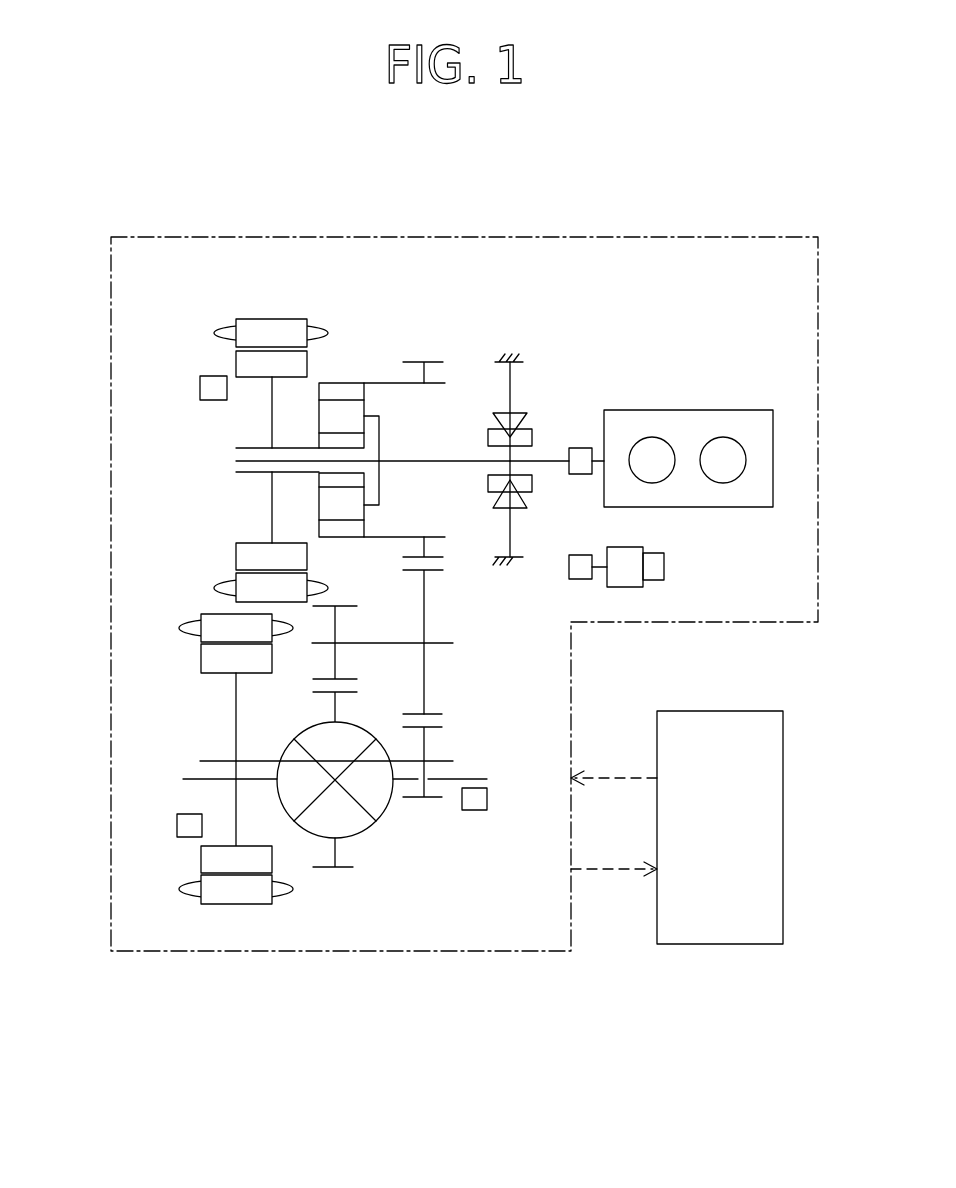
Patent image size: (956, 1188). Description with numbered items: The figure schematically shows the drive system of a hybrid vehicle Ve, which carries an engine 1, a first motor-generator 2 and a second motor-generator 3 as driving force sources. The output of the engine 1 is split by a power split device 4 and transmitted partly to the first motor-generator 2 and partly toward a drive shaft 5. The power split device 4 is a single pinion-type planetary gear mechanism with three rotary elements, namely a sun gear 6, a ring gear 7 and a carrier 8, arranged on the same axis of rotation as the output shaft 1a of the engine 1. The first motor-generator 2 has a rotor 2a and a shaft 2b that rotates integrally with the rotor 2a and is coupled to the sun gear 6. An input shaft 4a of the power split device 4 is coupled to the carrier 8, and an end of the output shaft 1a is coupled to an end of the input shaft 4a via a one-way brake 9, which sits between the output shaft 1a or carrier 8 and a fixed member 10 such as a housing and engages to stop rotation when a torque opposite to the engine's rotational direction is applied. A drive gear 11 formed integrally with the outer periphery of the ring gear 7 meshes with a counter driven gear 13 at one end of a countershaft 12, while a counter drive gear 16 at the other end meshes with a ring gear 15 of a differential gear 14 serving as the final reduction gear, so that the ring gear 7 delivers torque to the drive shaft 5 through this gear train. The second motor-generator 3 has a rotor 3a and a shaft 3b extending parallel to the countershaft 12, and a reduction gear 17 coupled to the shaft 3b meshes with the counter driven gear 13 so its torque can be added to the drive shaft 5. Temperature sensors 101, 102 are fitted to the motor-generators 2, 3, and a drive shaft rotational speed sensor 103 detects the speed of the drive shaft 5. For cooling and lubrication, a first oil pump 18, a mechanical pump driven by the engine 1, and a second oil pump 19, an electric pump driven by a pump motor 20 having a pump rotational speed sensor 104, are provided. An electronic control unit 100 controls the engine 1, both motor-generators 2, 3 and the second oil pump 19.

The vehicle Ve is at (572, 220).
The engine 1 is at (730, 432).
The output shaft 1a is at (553, 466).
The first motor-generator 2 is at (206, 356).
The rotor 2a is at (236, 558).
The shaft 2b is at (293, 478).
The second motor-generator 3 is at (199, 695).
The rotor 3a is at (201, 858).
The shaft 3b is at (264, 757).
The power split device 4 is at (385, 350).
The input shaft 4a is at (457, 458).
The drive shaft 5 is at (184, 780).
The sun gear 6 is at (318, 440).
The ring gear 7 is at (345, 383).
The carrier 8 is at (379, 425).
The one-way brake 9 is at (532, 378).
The fixed member 10 is at (513, 568).
The drive gear 11 is at (432, 360).
The countershaft 12 is at (388, 640).
The counter driven gear 13 is at (437, 572).
The differential gear 14 is at (373, 835).
The ring gear 15 is at (321, 875).
The counter drive gear 16 is at (345, 602).
The reduction gear 17 is at (435, 802).
The first oil pump 18 is at (580, 448).
The second oil pump 19 is at (580, 580).
The pump motor 20 is at (628, 588).
The electronic control unit 100 is at (723, 930).
The temperature sensor 101 is at (214, 400).
The temperature sensor 102 is at (177, 826).
The drive shaft rotational speed sensor 103 is at (475, 812).
The pump rotational speed sensor 104 is at (664, 566).